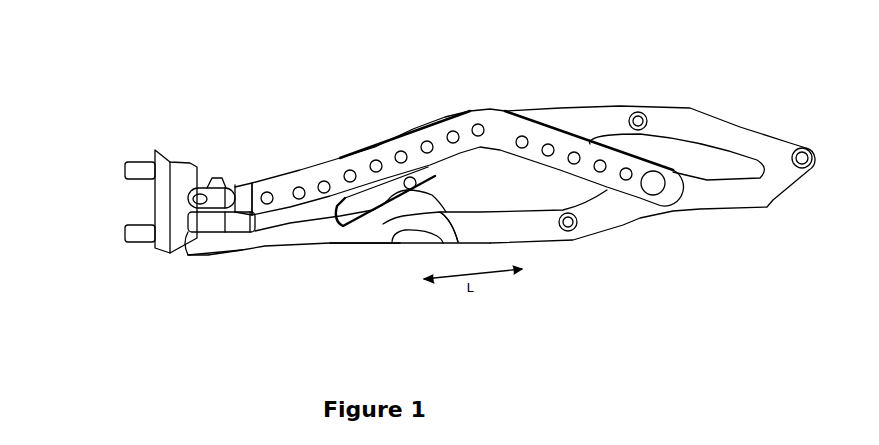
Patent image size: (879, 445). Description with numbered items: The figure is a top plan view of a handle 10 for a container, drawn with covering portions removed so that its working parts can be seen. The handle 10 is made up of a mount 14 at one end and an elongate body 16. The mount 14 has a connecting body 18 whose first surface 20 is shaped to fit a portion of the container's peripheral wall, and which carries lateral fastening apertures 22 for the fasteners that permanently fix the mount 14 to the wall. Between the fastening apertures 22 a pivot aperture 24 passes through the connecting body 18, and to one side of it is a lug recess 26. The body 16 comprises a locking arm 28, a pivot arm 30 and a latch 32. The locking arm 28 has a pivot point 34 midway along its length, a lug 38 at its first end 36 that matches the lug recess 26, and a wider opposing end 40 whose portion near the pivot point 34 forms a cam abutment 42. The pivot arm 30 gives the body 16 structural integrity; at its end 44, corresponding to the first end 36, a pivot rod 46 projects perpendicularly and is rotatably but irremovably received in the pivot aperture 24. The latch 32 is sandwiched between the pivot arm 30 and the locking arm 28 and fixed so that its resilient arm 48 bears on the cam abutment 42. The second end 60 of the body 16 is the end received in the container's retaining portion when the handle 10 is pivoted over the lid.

The handle 10 is at (293, 263).
The mount 14 is at (160, 135).
The body 16 is at (708, 224).
The connecting body 18 is at (145, 205).
The first surface 20 is at (155, 188).
The fastening apertures 22 is at (154, 160).
The pivot aperture 24 is at (200, 186).
The lug recess 26 is at (180, 220).
The locking arm 28 is at (363, 250).
The pivot arm 30 is at (413, 124).
The latch 32 is at (443, 171).
The pivot point 34 is at (312, 243).
The first end 36 is at (210, 250).
The lug 38 is at (187, 234).
The opposing end 40 is at (437, 245).
The cam abutment 42 is at (392, 243).
The end 44 is at (229, 186).
The pivot rod 46 is at (201, 204).
The resilient arm 48 is at (415, 216).
The second end 60 is at (803, 123).